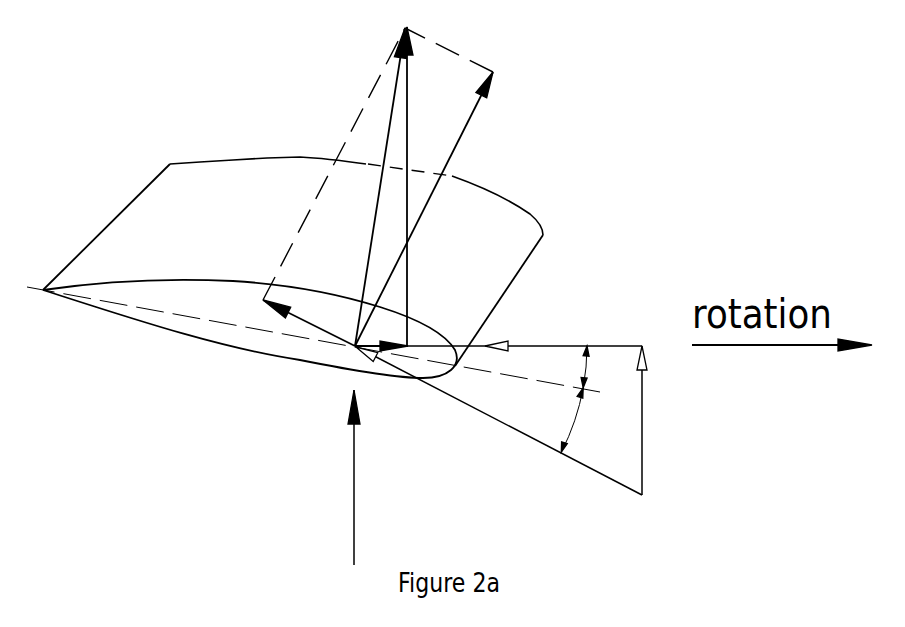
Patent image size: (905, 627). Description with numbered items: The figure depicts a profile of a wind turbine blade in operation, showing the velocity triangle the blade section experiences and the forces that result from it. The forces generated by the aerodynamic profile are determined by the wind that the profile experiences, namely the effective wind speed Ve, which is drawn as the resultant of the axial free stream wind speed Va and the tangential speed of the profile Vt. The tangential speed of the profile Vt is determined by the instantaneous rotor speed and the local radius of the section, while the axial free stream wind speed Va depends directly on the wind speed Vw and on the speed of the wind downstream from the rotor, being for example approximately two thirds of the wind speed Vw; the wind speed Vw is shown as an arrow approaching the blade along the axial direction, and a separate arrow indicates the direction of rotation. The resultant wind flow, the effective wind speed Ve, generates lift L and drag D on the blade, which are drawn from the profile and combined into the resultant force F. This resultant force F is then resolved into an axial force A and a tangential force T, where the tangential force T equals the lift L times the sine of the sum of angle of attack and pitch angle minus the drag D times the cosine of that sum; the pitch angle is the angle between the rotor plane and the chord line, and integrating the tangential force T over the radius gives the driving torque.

The resultant aerodynamic force F is at (385, 155).
The lift L is at (478, 106).
The drag D is at (320, 330).
The axial force A is at (408, 143).
The tangential force T is at (373, 343).
The tangential speed of the profile Vt is at (570, 345).
The axial free stream wind speed Va is at (647, 435).
The effective wind speed Ve is at (502, 422).
The wind speed Vw is at (331, 477).